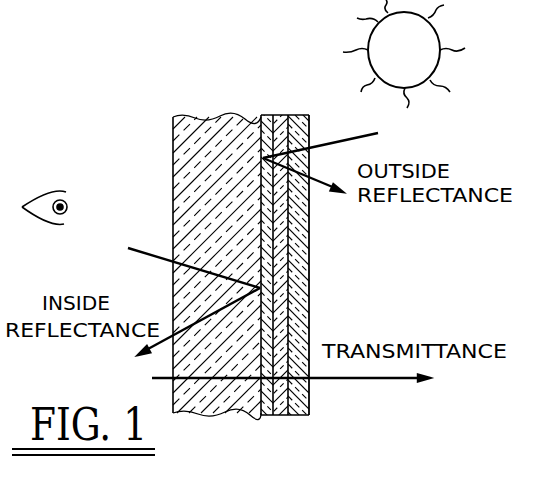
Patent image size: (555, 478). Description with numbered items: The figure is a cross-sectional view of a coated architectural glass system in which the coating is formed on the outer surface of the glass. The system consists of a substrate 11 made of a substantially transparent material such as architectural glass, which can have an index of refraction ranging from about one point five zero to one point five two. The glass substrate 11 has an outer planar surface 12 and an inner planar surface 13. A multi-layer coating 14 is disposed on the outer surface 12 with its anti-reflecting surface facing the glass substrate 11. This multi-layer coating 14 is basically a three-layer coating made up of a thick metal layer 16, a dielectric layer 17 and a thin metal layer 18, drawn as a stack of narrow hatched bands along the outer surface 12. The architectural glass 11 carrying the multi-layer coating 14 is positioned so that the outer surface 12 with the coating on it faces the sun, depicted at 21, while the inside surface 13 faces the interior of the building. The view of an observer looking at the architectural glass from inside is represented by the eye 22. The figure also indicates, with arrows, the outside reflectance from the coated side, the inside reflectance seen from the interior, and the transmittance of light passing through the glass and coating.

The substrate 11 is at (195, 120).
The outer planar surface 12 is at (268, 118).
The inner planar surface 13 is at (173, 160).
The multi-layer coating 14 is at (245, 109).
The thick metal layer 16 is at (295, 414).
The dielectric layer 17 is at (281, 414).
The thin metal layer 18 is at (266, 413).
The sun 21 is at (393, 59).
The eye 22 is at (66, 197).